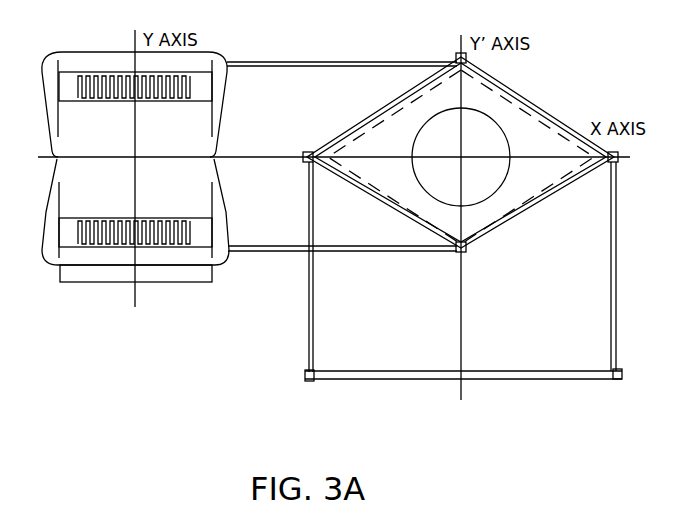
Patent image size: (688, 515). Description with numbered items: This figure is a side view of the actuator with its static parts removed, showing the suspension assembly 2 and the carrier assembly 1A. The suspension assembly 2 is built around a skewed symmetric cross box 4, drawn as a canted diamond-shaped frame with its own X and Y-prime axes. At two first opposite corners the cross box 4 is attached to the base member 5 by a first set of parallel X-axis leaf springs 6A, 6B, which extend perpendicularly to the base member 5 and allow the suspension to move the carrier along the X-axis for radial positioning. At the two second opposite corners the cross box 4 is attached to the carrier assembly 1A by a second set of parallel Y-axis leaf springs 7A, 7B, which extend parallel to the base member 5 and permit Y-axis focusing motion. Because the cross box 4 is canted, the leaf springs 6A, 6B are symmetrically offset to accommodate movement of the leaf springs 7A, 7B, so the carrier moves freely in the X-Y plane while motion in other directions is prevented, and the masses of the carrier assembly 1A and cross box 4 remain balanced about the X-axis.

The carrier assembly 1A is at (48, 272).
The suspension assembly 2 is at (538, 77).
The cross box 4 is at (538, 107).
The base member 5 is at (588, 380).
The leaf spring 6A is at (313, 338).
The leaf spring 6B is at (611, 327).
The leaf spring 7A is at (300, 62).
The leaf spring 7B is at (296, 252).